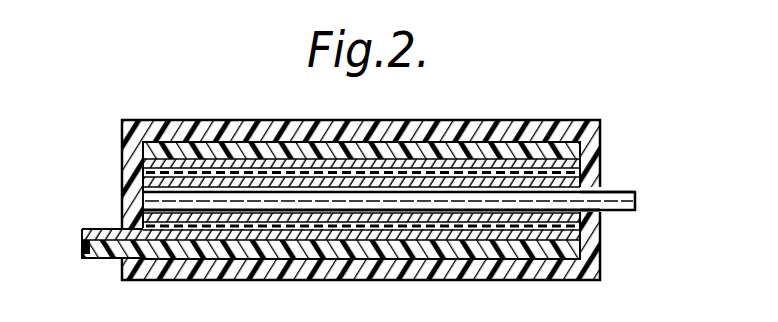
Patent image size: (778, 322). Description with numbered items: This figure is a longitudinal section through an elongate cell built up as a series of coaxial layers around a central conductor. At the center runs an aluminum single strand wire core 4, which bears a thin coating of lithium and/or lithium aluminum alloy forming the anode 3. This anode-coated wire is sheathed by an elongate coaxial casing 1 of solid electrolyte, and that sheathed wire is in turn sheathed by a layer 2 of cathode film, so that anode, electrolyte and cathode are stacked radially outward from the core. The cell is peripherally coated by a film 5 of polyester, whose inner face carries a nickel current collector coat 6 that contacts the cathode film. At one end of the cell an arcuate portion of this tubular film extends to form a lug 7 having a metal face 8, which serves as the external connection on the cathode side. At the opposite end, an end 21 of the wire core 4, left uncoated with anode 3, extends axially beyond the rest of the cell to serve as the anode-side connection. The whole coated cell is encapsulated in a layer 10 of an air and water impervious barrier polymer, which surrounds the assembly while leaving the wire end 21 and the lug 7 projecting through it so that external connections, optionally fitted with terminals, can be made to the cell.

The elongate coaxial casing 1 is at (233, 205).
The layer of cathode film 2 is at (302, 200).
The anode 3 is at (365, 168).
The wire core 4 is at (153, 193).
The film of polyester 5 is at (404, 148).
The nickel current collector coat 6 is at (459, 236).
The lug 7 is at (84, 257).
The metal face 8 is at (85, 230).
The layer of barrier polymer 10 is at (555, 131).
The end of the wire core 21 is at (626, 193).